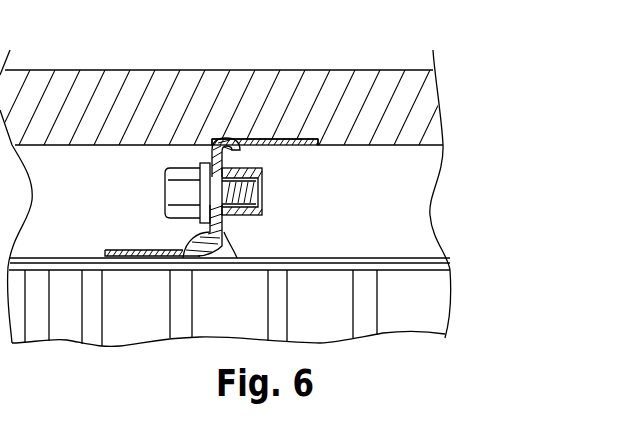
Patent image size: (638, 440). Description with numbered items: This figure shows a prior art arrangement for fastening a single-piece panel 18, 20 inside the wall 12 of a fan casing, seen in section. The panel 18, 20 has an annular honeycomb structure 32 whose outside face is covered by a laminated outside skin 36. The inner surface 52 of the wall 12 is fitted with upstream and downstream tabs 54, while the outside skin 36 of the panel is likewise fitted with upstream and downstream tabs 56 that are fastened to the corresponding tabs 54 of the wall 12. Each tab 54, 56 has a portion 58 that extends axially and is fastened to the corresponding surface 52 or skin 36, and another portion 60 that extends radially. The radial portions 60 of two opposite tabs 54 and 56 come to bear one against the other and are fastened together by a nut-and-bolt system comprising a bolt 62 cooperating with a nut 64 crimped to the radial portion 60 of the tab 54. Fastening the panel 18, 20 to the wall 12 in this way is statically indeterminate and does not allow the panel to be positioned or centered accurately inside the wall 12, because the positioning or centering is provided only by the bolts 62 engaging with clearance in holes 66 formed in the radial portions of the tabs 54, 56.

The wall 12 is at (364, 104).
The single-piece panel 18 is at (235, 338).
The single-piece panel 20 is at (235, 338).
The annular honeycomb structure 32 is at (425, 293).
The outside skin 36 is at (415, 259).
The inner surface 52 is at (372, 143).
The tab 54 is at (289, 162).
The tab 56 is at (129, 233).
The axial portion 58 is at (279, 139).
The radial portion 60 is at (231, 149).
The bolt 62 is at (183, 174).
The nut 64 is at (239, 218).
The hole 66 is at (214, 232).